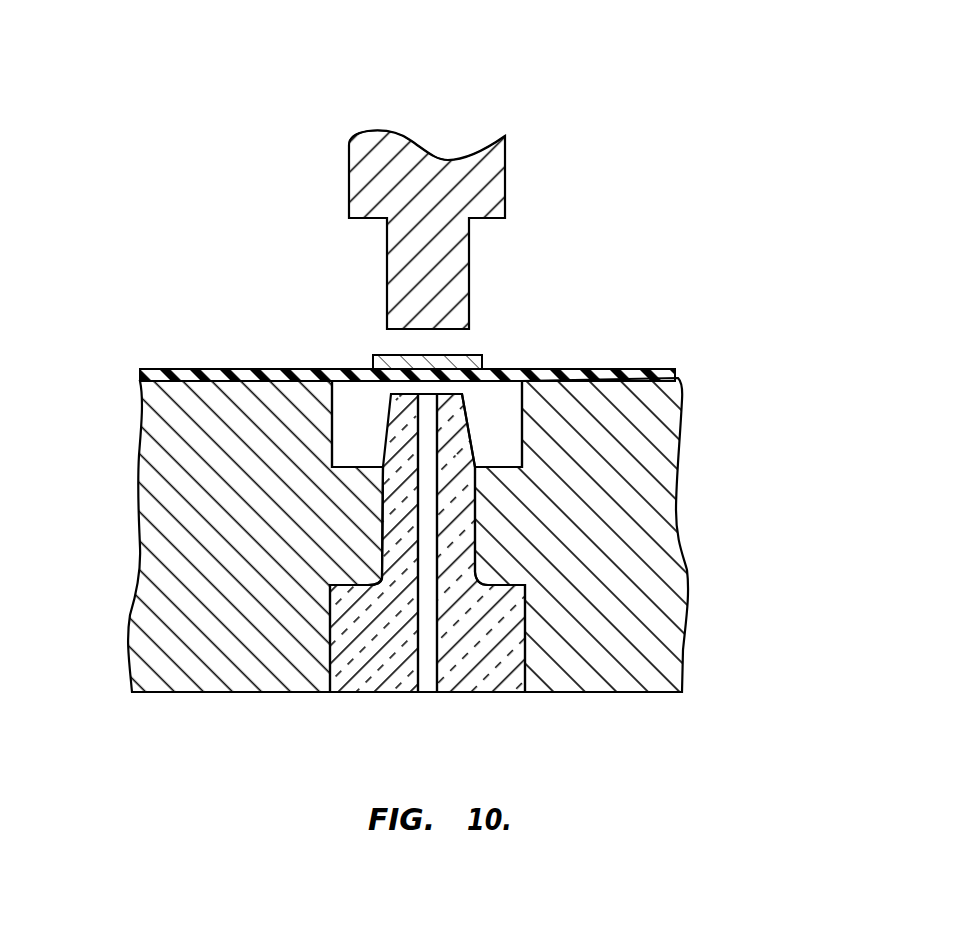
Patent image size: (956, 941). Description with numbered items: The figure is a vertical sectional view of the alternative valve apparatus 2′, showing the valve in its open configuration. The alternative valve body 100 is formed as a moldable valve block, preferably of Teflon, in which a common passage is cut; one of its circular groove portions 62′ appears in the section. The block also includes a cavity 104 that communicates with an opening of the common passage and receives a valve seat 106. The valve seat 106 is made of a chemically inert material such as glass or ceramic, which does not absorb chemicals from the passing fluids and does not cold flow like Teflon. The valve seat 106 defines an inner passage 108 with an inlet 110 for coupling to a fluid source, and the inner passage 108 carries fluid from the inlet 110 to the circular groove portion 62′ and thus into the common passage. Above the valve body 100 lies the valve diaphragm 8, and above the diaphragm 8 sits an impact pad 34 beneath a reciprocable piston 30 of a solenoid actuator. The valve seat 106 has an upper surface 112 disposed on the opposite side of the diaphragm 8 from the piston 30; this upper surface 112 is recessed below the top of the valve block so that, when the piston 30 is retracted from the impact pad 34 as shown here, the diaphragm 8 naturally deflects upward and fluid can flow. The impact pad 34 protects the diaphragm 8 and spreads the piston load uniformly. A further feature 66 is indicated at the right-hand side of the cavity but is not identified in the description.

The valve apparatus 2′ is at (700, 92).
The piston 30 is at (540, 233).
The impact pad 34 is at (383, 353).
The valve diaphragm 8 is at (168, 370).
The circular groove portion 62′ is at (352, 405).
The die cavity opening 66 is at (508, 465).
The upper surface 112 is at (458, 392).
The valve body 100 is at (722, 455).
The cavity 104 is at (336, 668).
The inner passage 108 is at (432, 522).
The inlet 110 is at (427, 693).
The valve seat 106 is at (526, 701).